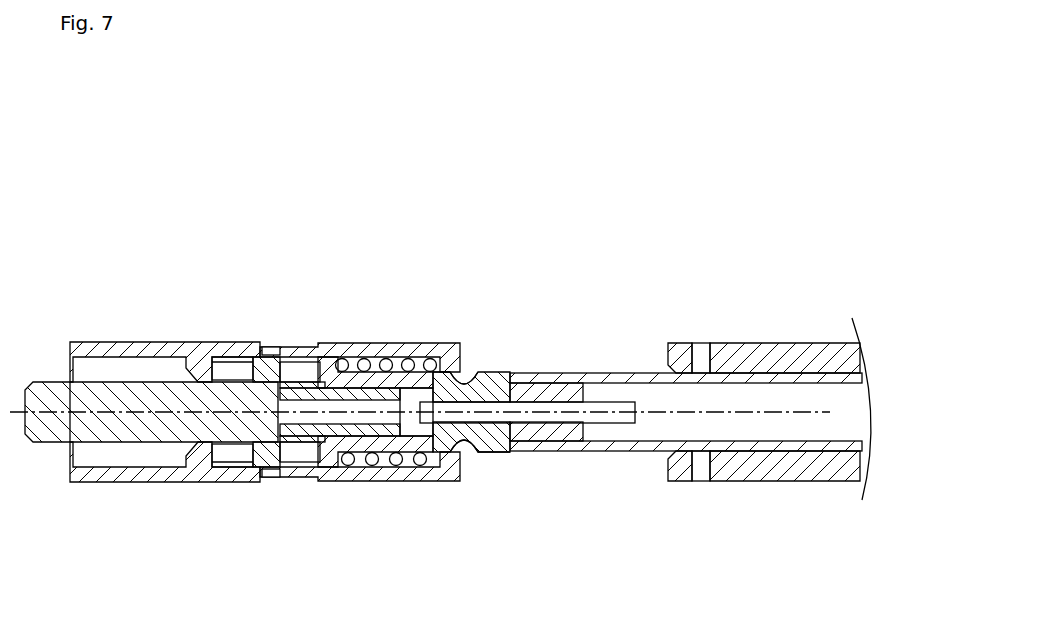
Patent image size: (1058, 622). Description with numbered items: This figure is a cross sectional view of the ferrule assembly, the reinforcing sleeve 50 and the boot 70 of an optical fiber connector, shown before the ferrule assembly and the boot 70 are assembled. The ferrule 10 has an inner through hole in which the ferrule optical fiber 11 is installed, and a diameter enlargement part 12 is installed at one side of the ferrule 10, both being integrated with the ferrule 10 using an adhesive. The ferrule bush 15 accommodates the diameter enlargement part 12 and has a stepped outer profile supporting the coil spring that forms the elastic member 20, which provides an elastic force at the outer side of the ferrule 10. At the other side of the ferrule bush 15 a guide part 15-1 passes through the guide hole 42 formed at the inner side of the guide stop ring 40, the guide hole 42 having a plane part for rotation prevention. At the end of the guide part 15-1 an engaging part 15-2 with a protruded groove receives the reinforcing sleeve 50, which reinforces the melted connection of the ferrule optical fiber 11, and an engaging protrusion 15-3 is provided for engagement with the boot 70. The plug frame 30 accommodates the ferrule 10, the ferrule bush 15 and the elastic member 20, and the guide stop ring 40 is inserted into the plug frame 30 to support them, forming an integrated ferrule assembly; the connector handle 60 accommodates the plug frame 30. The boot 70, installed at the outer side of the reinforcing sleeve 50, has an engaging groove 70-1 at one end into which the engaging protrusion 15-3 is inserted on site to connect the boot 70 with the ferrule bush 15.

The ferrule 10 is at (92, 432).
The ferrule optical fiber 11 is at (628, 416).
The diameter enlargement part 12 is at (300, 430).
The ferrule bush 15 is at (316, 445).
The guide part 15-1 is at (470, 372).
The engaging part 15-2 is at (564, 440).
The engaging protrusion 15-3 is at (485, 455).
The elastic member 20 is at (374, 457).
The plug frame 30 is at (368, 345).
The guide stop ring 40 is at (499, 409).
The guide hole 42 is at (487, 368).
The reinforcing sleeve 50 is at (648, 373).
The connector handle 60 is at (200, 345).
The boot 70 is at (769, 454).
The engaging groove 70-1 is at (703, 470).